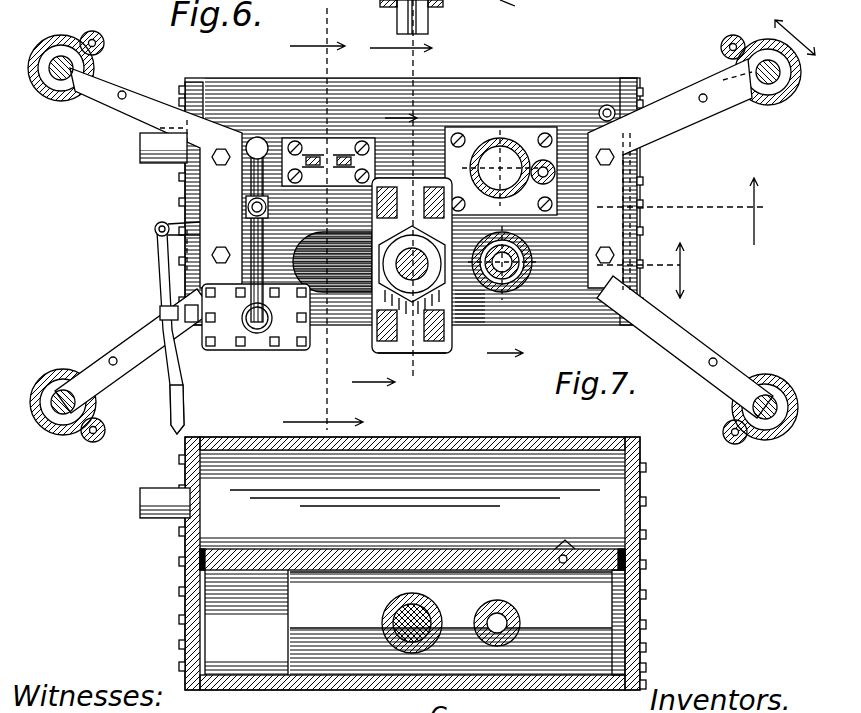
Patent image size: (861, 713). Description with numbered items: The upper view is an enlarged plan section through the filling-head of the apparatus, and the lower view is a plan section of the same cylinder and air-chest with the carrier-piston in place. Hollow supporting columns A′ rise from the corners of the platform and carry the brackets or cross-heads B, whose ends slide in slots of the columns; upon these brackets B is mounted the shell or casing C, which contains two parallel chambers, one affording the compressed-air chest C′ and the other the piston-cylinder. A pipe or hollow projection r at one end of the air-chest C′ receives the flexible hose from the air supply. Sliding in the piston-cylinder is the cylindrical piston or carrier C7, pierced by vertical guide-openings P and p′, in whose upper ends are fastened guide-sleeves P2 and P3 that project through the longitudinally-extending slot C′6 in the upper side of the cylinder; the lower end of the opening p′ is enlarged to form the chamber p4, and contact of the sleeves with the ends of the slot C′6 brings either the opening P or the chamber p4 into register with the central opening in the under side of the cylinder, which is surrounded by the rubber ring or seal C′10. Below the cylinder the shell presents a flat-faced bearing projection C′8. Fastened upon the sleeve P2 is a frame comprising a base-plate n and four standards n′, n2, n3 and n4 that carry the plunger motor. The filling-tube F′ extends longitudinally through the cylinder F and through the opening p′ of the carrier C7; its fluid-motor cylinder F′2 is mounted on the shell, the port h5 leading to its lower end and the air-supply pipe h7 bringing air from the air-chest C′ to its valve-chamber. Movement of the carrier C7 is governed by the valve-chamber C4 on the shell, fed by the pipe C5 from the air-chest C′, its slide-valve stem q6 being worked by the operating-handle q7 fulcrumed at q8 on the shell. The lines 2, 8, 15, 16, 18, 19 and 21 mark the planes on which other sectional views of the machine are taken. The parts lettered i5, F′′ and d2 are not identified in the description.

In FIG. 6, the shell or casing or filling-head C is at (568, 82).
In FIG. 7, the compressed-air chest C′ is at (426, 462).
In FIG. 6, the hollow supporting columns or tubes A′ is at (52, 102).
In FIG. 6, the brackets or cross-heads B is at (213, 187).
In FIG. 6, the bracket plate i5 is at (413, 206).
In FIG. 6, the air-supply pipe h7 is at (612, 107).
In FIG. 6, the port h5 is at (541, 167).
In FIG. 6, the vertical tube or cylinder F′2 is at (501, 171).
In FIG. 6, the filling-tube F′ is at (513, 283).
In FIG. 6, the inner bearing ring F′′ is at (507, 283).
In FIG. 6, the cylinder F is at (519, 312).
In FIG. 6, the valve-chamber C4 is at (256, 350).
In FIG. 6, the pipe C5 is at (268, 240).
In FIG. 6, the longitudinally-extending slot C′6 is at (470, 288).
In FIG. 7, the cylindrical piston or carrier C7 is at (600, 617).
In FIG. 6, the rubber ring or seal C′10 is at (443, 3).
In FIG. 6, the projection C′8 is at (515, 4).
In FIG. 6, the fulcrum q8 is at (156, 228).
In FIG. 6, the valve-stem q6 is at (180, 322).
In FIG. 6, the operating-handle q7 is at (174, 402).
In FIG. 6, the guide-opening P is at (412, 265).
In FIG. 6, the guide-opening p′ is at (412, 270).
In FIG. 6, the chamber p4 is at (396, 8).
In FIG. 7, the guide-sleeve P2 is at (430, 612).
In FIG. 7, the guide-sleeve P3 is at (522, 618).
In FIG. 6, the base-plate n is at (398, 342).
In FIG. 6, the standard n′ is at (388, 355).
In FIG. 6, the standard n2 is at (440, 343).
In FIG. 6, the standard n3 is at (404, 190).
In FIG. 6, the standard n4 is at (424, 204).
In FIG. 7, the pipe or hollow projection r is at (146, 497).
In FIG. 7, the partition d2 is at (258, 655).
In FIG. 6, the section lines 8 is at (384, 252).
In FIG. 6, the section line 15 is at (505, 364).
In FIG. 6, the section line 16 is at (692, 211).
In FIG. 6, the section line 18 is at (401, 190).
In FIG. 6, the section line 19 is at (323, 225).
In FIG. 6, the section line 2 is at (648, 270).
In FIG. 6, the section line 21 is at (795, 32).